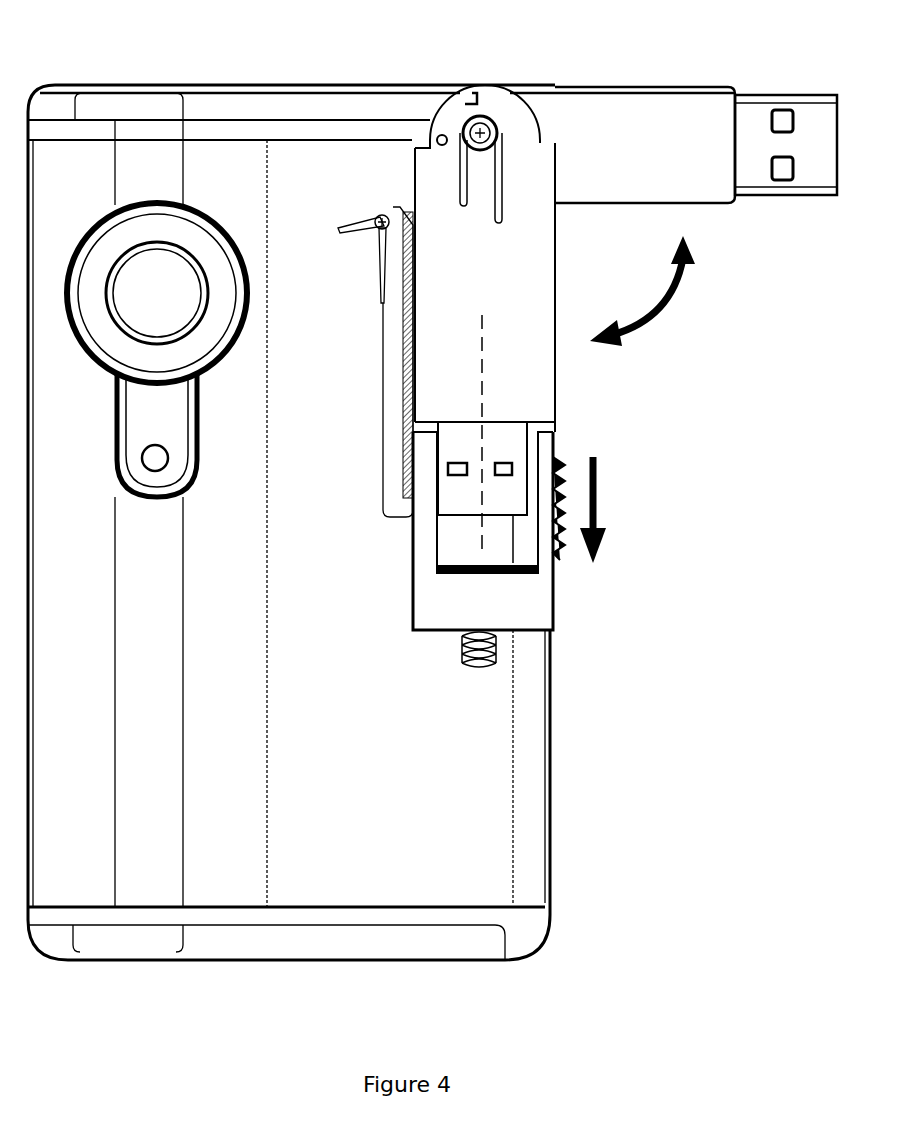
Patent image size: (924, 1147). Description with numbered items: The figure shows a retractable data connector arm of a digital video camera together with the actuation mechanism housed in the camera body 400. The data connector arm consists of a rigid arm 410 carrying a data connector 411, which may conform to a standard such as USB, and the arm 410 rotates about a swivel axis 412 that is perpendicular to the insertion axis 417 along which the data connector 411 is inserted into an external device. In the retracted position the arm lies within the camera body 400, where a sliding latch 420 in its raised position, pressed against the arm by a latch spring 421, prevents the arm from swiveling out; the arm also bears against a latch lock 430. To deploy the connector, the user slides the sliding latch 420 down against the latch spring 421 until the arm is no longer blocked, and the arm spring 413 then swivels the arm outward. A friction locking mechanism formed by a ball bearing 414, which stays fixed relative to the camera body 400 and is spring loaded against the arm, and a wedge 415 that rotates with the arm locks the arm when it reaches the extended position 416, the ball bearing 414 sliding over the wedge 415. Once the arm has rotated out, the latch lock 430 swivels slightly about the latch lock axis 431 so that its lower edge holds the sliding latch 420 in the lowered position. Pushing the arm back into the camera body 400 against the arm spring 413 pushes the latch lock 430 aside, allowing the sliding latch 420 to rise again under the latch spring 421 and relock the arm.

The camera body 400 is at (553, 822).
The arm 410 is at (485, 258).
The data connector 411 is at (447, 492).
The swivel axis 412 is at (488, 127).
The arm spring 413 is at (500, 168).
The ball bearing 414 is at (440, 144).
The wedge 415 is at (467, 104).
The extended position 416 is at (693, 172).
The insertion axis 417 is at (490, 363).
The sliding latch 420 is at (540, 598).
The latch spring 421 is at (500, 658).
The latch lock 430 is at (377, 380).
The latch lock axis 431 is at (375, 226).